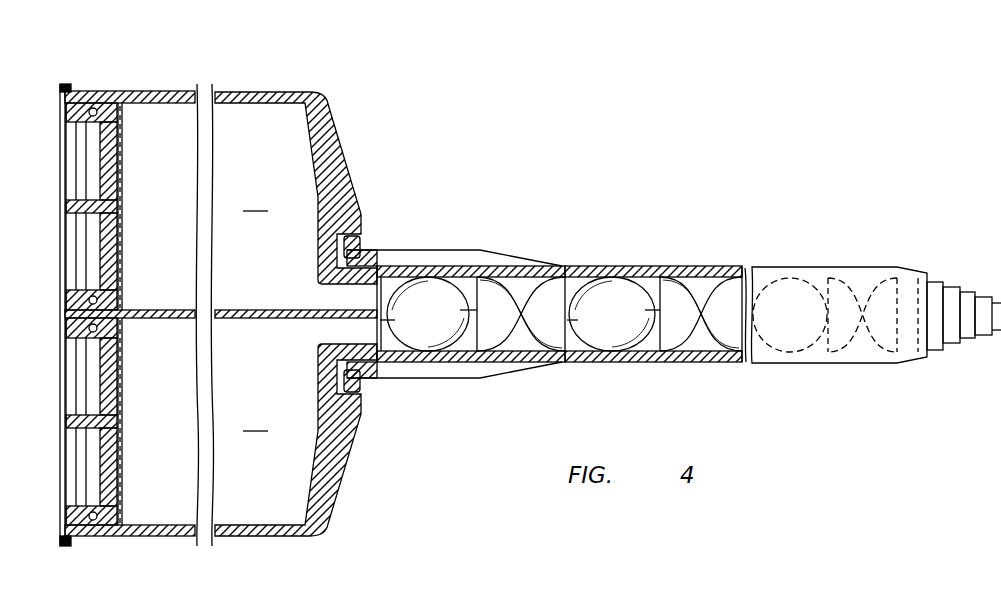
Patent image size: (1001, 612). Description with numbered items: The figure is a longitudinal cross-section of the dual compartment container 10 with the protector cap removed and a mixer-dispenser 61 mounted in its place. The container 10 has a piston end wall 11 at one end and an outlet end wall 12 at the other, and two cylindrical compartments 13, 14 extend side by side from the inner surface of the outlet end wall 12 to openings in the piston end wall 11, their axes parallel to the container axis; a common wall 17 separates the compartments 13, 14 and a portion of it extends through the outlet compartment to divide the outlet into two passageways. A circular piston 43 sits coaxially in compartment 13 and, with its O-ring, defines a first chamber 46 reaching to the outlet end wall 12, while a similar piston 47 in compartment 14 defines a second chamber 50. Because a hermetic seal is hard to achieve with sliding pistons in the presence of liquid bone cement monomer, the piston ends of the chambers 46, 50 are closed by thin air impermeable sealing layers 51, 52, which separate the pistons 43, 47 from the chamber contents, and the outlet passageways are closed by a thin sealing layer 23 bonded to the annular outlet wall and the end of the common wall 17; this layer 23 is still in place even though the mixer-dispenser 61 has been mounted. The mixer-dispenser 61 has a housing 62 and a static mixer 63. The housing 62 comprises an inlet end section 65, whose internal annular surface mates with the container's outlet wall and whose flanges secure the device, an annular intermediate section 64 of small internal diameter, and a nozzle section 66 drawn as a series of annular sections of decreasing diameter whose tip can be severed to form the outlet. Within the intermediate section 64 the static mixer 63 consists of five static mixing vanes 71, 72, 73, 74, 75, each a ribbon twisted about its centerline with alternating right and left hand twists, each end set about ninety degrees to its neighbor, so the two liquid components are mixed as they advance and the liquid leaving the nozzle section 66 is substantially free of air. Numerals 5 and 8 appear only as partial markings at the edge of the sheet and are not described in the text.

The upper lens element 5 is at (4, 179).
The lower lens element 8 is at (4, 409).
The dual compartment container 10 is at (430, 488).
The piston end wall 11 is at (66, 83).
The outlet end wall 12 is at (334, 133).
The cylindrical compartment 13 is at (156, 102).
The cylindrical compartment 14 is at (272, 530).
The common wall 17 is at (162, 309).
The air impermeable sealing layer 23 is at (392, 266).
The circular piston 43 is at (65, 139).
The first chamber 46 is at (257, 200).
The circular piston 47 is at (65, 487).
The second chamber 50 is at (257, 420).
The air impermeable sealing layer 51 is at (122, 170).
The air impermeable sealing layer 52 is at (122, 457).
The mixer-dispenser 61 is at (819, 242).
The housing 62 is at (677, 264).
The static mixer 63 is at (436, 298).
The annular intermediate section 64 is at (573, 310).
The inlet end section 65 is at (373, 368).
The nozzle section 66 is at (910, 270).
The static mixing vane 71 is at (433, 353).
The static mixing vane 72 is at (523, 362).
The static mixing vane 73 is at (623, 353).
The static mixing vane 74 is at (768, 352).
The static mixing vane 75 is at (855, 343).